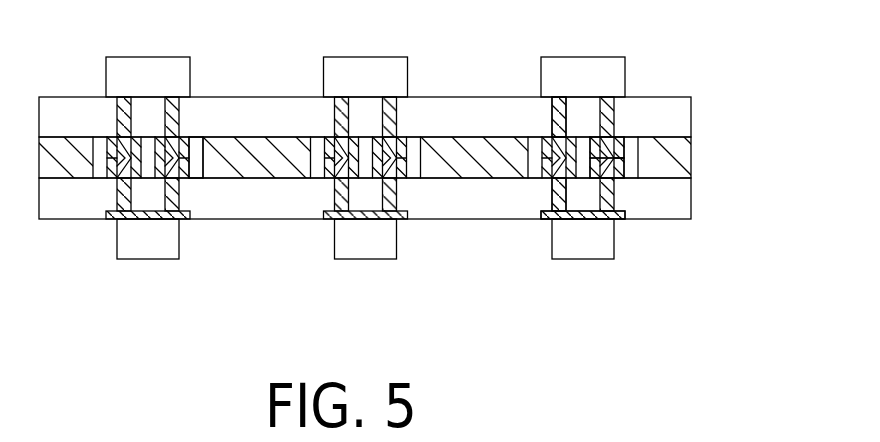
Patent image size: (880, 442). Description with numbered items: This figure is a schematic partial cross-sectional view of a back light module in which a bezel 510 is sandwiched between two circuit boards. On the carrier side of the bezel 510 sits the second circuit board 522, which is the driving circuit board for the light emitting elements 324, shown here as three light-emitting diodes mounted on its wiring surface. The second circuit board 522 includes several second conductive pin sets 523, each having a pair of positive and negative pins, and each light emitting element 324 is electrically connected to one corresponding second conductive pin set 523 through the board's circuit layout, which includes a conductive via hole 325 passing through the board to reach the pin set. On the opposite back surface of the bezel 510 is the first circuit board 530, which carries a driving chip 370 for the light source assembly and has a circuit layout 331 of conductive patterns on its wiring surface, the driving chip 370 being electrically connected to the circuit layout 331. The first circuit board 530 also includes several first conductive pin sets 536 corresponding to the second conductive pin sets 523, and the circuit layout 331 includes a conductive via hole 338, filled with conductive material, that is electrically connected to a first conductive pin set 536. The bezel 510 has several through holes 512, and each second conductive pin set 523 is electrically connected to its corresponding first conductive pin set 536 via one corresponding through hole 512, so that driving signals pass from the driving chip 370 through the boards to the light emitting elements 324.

The light emitting element 324 is at (148, 66).
The through hole 512 is at (203, 127).
The conductive via hole 325 is at (558, 110).
The second conductive pin set 523 is at (616, 137).
The second circuit board 522 is at (682, 118).
The bezel 510 is at (682, 159).
The first circuit board 530 is at (682, 201).
The first conductive pin set 536 is at (618, 172).
The driving chip 370 is at (147, 247).
The conductive via hole 338 is at (558, 193).
The circuit layout 331 is at (547, 213).